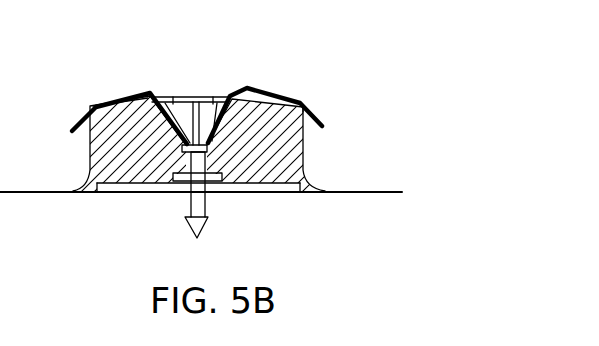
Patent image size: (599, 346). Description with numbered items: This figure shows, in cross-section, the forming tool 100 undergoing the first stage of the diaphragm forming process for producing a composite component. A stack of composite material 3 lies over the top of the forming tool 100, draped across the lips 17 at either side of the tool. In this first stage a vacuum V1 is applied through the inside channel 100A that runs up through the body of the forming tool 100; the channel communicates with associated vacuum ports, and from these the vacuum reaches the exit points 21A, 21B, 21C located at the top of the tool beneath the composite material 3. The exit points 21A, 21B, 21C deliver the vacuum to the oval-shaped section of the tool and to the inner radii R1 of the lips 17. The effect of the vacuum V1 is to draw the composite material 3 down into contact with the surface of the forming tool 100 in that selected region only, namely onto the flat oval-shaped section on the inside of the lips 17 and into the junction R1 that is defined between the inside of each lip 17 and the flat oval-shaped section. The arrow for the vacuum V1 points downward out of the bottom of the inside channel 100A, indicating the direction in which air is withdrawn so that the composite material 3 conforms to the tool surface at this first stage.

The forming tool 100 is at (305, 165).
The inside channel 100A is at (210, 178).
The lips 17 is at (138, 100).
The composite material 3 is at (283, 100).
The exit point 21A is at (200, 98).
The exit point 21B is at (167, 97).
The exit point 21C is at (223, 99).
The inner radius R1 is at (238, 103).
The vacuum V1 is at (197, 241).